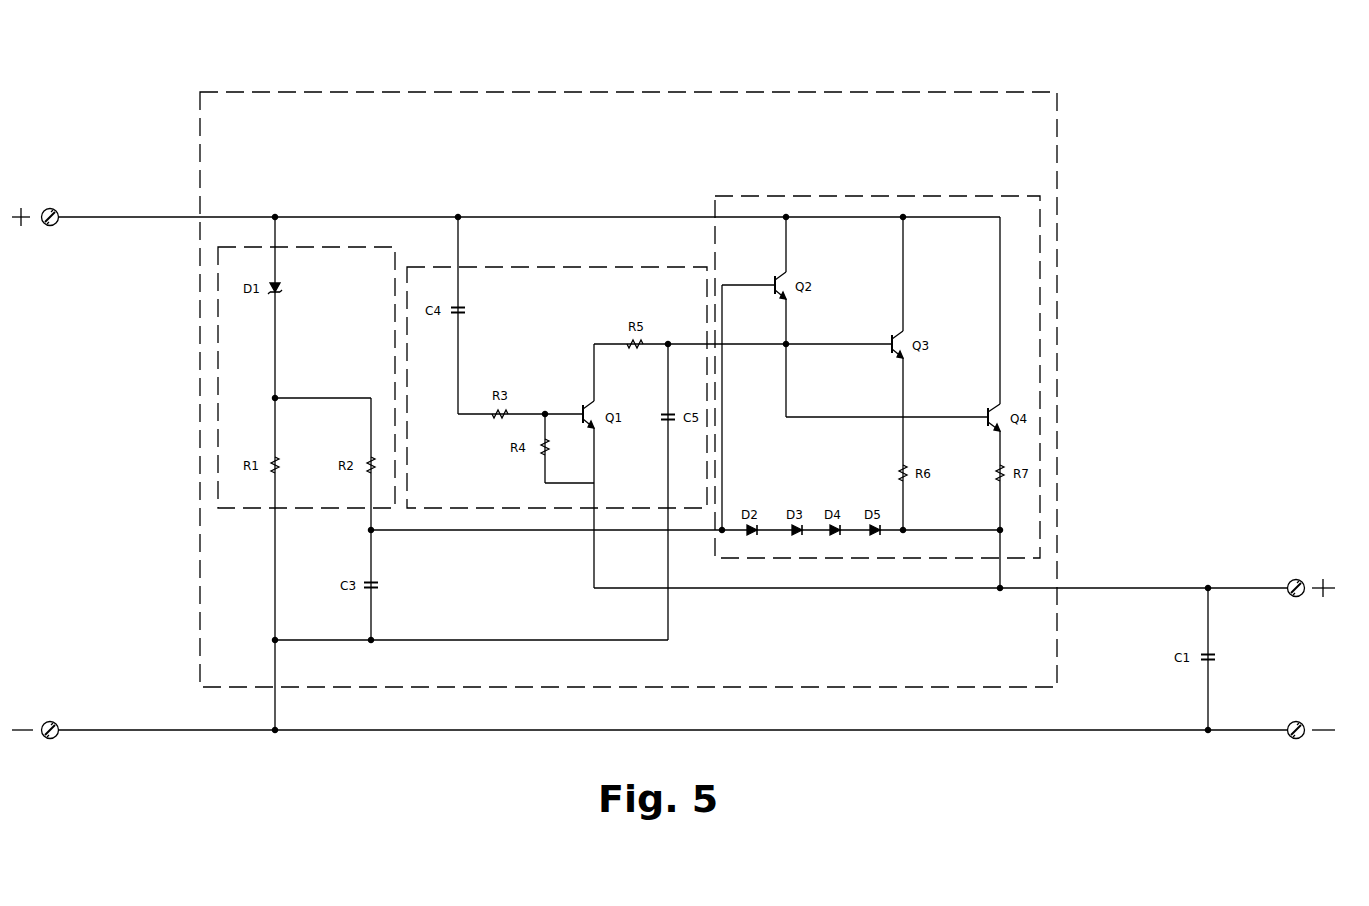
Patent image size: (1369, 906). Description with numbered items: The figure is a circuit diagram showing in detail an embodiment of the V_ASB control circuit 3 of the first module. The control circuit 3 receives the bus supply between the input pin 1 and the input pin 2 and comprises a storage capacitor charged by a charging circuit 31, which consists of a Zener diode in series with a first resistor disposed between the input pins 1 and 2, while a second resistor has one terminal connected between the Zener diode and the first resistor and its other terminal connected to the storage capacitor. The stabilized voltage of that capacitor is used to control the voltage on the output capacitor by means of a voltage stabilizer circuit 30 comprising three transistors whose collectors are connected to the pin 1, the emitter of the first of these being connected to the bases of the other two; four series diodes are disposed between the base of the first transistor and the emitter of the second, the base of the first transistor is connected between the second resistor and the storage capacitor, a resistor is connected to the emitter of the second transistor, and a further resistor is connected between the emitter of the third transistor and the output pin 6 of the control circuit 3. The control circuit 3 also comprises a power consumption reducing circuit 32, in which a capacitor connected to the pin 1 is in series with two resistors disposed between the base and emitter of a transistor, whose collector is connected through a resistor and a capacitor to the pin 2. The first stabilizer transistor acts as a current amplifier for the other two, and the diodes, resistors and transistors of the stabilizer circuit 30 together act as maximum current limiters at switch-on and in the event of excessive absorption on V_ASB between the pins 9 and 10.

The input pin 1 is at (506, 200).
The input pin 2 is at (649, 718).
The V_ASB control circuit 3 is at (628, 389).
The output pin 6 is at (940, 578).
The pin 9 is at (1306, 619).
The pin 10 is at (1311, 722).
The voltage stabilizer circuit 30 is at (880, 188).
The charging circuit 31 is at (312, 233).
The power consumption reducing circuit 32 is at (500, 518).